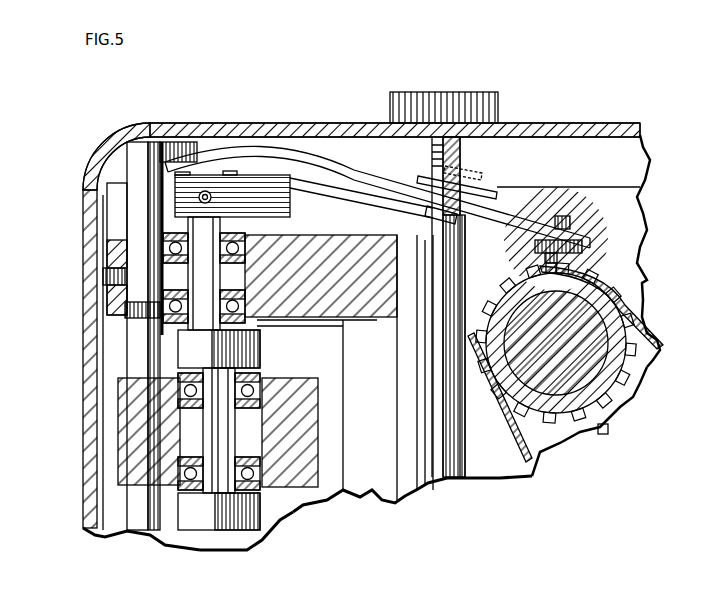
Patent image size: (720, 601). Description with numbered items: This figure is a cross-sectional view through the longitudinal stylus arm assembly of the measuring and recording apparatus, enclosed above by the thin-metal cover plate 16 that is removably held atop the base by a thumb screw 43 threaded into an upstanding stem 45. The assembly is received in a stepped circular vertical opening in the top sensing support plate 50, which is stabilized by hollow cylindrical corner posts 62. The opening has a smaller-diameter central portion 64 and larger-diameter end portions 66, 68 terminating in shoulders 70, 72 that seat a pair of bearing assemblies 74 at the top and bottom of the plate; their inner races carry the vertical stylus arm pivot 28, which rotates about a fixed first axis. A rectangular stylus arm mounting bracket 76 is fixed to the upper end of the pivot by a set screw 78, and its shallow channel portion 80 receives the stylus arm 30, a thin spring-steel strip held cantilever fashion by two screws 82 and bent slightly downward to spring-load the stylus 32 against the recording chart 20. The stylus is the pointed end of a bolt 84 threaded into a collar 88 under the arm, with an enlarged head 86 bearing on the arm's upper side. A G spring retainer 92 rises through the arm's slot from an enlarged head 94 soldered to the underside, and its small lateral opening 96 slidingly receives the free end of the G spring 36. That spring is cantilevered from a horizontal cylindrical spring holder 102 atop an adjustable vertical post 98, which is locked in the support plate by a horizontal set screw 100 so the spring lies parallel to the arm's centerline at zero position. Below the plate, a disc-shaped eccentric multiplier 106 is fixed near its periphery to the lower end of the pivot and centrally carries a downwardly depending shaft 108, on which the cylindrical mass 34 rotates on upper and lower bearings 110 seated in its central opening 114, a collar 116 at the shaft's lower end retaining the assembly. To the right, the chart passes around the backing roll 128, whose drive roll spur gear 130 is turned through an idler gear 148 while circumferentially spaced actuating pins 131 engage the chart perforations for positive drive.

The cover plate 16 is at (531, 123).
The recording chart 20 is at (647, 350).
The stylus arm pivot 28 is at (160, 337).
The stylus arm 30 is at (530, 227).
The stylus 32 is at (547, 267).
The mass 34 is at (343, 380).
The G spring 36 is at (403, 175).
The thumb screw 43 is at (490, 92).
The stem 45 is at (527, 460).
The top sensing support plate 50 is at (397, 235).
The corner post 62 is at (125, 508).
The central portion 64 is at (219, 349).
The larger diameter end portion 66 is at (245, 262).
The larger diameter end portion 68 is at (317, 330).
The shoulder 70 is at (160, 243).
The shoulder 72 is at (162, 302).
The bearing assembly 74 is at (250, 235).
The stylus arm mounting bracket 76 is at (293, 193).
The set screw 78 is at (175, 182).
The channel portion 80 is at (292, 148).
The screw 82 is at (230, 171).
The bolt 84 is at (562, 258).
The enlarged head 86 is at (568, 220).
The collar 88 is at (535, 244).
The G spring retainer 92 is at (466, 171).
The enlarged head 94 is at (466, 228).
The opening 96 is at (482, 178).
The vertical post 98 is at (132, 198).
The set screw 100 is at (103, 276).
The spring holder 102 is at (180, 142).
The eccentric multiplier 106 is at (183, 356).
The shaft 108 is at (213, 480).
The bearing 110 is at (268, 372).
The central opening 114 is at (240, 427).
The collar 116 is at (253, 543).
The backing roll 128 is at (608, 328).
The drive roll spur gear 130 is at (642, 382).
The actuating pin 131 is at (620, 308).
The idler gear 148 is at (608, 428).